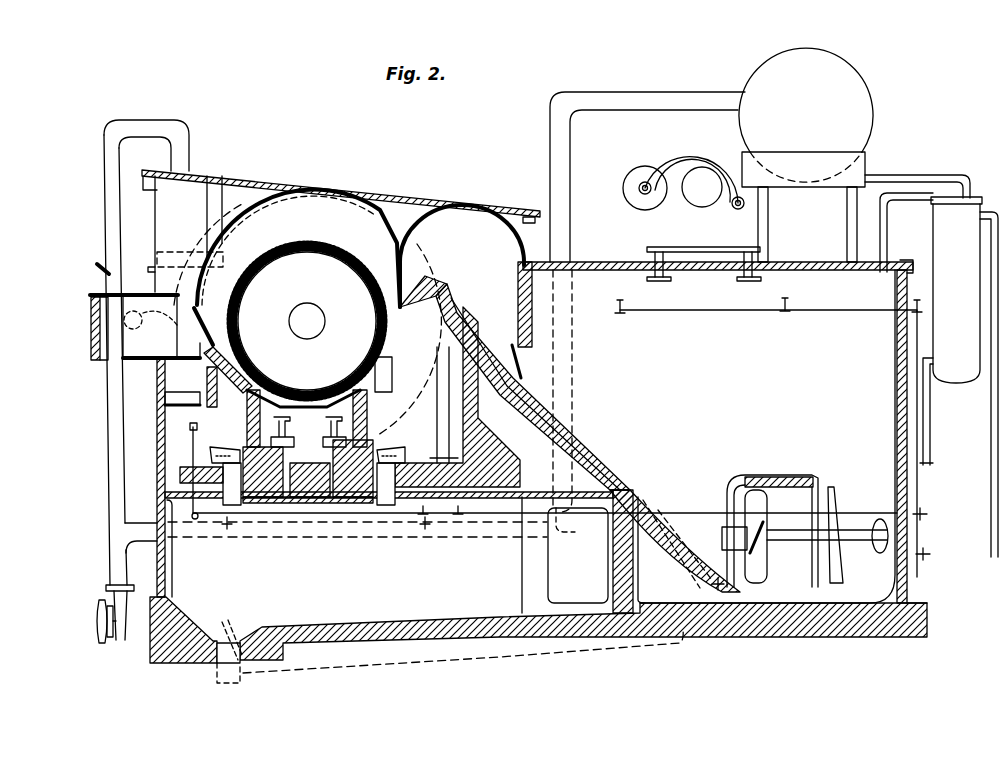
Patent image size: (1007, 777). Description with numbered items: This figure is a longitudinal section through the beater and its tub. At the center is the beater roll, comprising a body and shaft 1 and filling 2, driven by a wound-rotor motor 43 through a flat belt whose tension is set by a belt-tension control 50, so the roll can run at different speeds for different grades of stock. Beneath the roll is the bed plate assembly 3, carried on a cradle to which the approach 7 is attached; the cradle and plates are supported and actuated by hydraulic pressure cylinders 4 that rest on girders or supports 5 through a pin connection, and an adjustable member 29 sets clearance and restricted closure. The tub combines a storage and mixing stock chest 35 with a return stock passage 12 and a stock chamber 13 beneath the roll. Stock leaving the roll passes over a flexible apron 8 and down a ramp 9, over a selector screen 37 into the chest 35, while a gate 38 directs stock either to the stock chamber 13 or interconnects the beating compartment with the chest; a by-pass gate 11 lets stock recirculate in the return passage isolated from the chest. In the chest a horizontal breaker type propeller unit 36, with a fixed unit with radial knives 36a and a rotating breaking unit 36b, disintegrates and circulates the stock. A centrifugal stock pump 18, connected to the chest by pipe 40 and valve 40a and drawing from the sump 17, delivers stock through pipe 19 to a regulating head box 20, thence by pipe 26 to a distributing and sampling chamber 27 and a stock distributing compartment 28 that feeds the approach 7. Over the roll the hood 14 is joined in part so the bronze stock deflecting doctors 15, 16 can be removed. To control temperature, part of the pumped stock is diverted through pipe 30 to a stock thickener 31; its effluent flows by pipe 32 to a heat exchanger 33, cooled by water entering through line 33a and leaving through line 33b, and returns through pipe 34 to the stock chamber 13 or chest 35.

The beater roll body and shaft 1 is at (309, 310).
The filling 2 is at (334, 249).
The bed plate assembly 3 is at (317, 430).
The hydraulic pressure cylinders 4 is at (321, 456).
The girders or supports 5 is at (325, 486).
The approach 7 is at (235, 373).
The flexible apron 8 is at (443, 285).
The ramp 9 is at (471, 339).
The by-pass gate 11 is at (518, 357).
The return stock passage 12 is at (460, 397).
The stock chamber 13 is at (538, 466).
The hood 14 is at (258, 210).
The stock deflecting doctor 15 is at (399, 275).
The stock deflecting doctor 16 is at (208, 332).
The sump 17 is at (236, 632).
The centrifugal stock pump 18 is at (119, 637).
The pipe 19 is at (109, 490).
The regulating head box 20 is at (157, 206).
The pipe 26 is at (100, 290).
The distributing and sampling chamber 27 is at (99, 328).
The stock distributing compartment 28 is at (180, 356).
The adjustable member 29 is at (199, 391).
The pipe 30 is at (145, 527).
The stock thickener 31 is at (821, 51).
The pipe 32 is at (918, 175).
The heat exchanger 33 is at (956, 290).
The cold water supply line 33a is at (938, 437).
The cold water discharge line 33b is at (992, 520).
The pipe 34 is at (886, 247).
The storage and mixing stock chest 35 is at (895, 369).
The propeller unit 36 is at (805, 531).
The fixed unit with radial knives 36a is at (823, 475).
The breaking unit 36b is at (836, 497).
The selector screen 37 is at (670, 519).
The gate 38 is at (578, 555).
The pipe 40 is at (387, 657).
The valve 40a is at (671, 594).
The wound-rotor motor 43 is at (702, 187).
The belt-tension control 50 is at (647, 203).